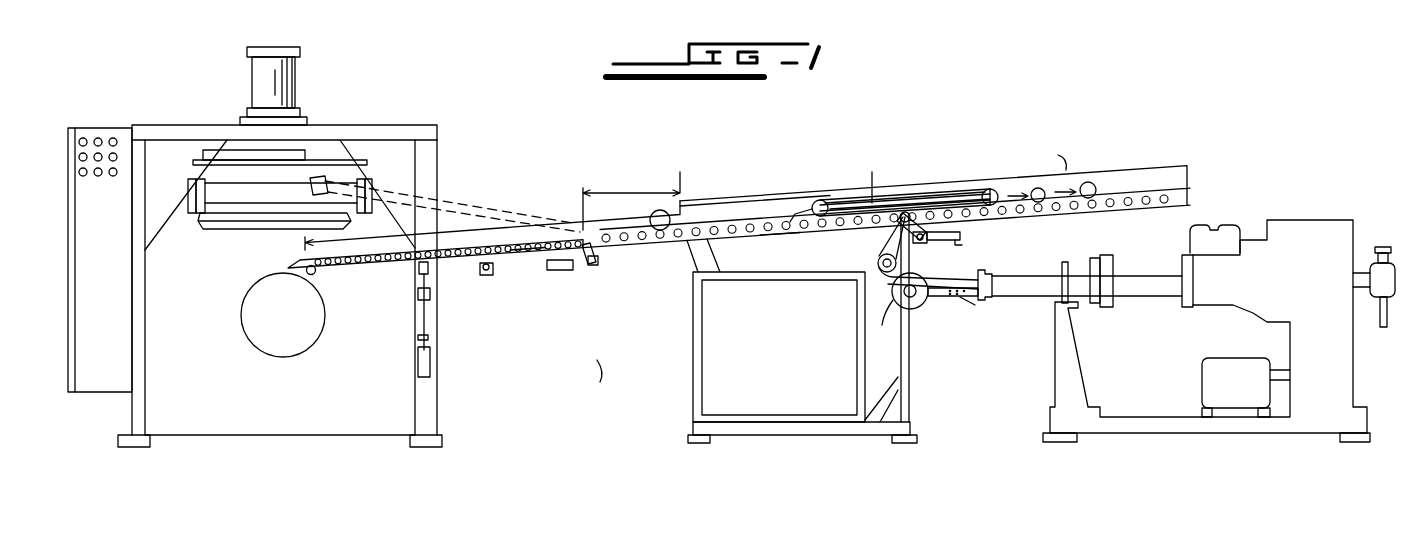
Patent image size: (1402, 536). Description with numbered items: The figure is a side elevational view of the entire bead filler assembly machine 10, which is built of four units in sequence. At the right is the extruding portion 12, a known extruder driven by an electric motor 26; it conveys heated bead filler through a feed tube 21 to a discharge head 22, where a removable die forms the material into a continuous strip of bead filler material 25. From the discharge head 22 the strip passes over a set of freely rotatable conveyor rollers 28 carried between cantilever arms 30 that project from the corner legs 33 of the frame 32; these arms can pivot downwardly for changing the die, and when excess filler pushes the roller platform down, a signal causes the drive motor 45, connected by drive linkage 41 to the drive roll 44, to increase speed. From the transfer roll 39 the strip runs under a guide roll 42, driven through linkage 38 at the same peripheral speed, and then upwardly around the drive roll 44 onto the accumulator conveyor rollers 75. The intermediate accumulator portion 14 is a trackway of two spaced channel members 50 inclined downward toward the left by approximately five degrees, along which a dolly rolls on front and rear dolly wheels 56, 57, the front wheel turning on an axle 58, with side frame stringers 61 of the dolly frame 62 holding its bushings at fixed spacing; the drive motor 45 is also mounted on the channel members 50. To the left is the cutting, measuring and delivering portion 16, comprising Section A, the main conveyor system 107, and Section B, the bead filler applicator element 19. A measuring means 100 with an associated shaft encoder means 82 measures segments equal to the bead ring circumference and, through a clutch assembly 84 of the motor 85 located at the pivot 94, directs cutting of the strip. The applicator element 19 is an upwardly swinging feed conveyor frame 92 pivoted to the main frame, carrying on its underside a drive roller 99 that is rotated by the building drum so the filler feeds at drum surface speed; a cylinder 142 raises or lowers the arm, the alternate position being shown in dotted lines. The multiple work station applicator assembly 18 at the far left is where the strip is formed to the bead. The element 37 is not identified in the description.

The bead filler assembly machine 10 is at (597, 382).
The extruding portion 12 is at (1253, 230).
The intermediate accumulator portion 14 is at (925, 163).
The cutting, measuring and delivering portion 16 is at (518, 188).
The multiple work station applicator assembly 18 is at (367, 115).
The bead filler applicator element 19 is at (446, 275).
The feed tube 21 is at (1117, 296).
The discharge head 22 is at (987, 300).
The strip of bead filler material 25 is at (935, 273).
The electric motor 26 is at (1250, 389).
The conveyor rollers 28 is at (967, 300).
The cantilever arms 30 is at (938, 296).
The frame 32 is at (865, 437).
The corner legs 33 is at (902, 407).
The pulley 37 is at (913, 297).
The linkage 38 is at (906, 257).
The transfer roll 39 is at (882, 325).
The drive linkage 41 is at (922, 232).
The guide roll 42 is at (878, 262).
The drive roll 44 is at (900, 213).
The drive motor 45 is at (955, 242).
The channel members 50 is at (1106, 170).
The front dolly wheel 56 is at (815, 208).
The rear dolly wheel 57 is at (995, 193).
The axle 58 is at (823, 200).
The side frame stringers 61 is at (907, 214).
The dolly frame 62 is at (960, 193).
The conveyor rollers 75 is at (783, 237).
The shaft encoder means 82 is at (493, 277).
The clutch assembly 84 is at (597, 267).
The motor 85 is at (558, 272).
The feed conveyor frame 92 is at (527, 262).
The pivot 94 is at (577, 221).
The drive roller 99 is at (316, 274).
The measuring means 100 is at (655, 212).
The main conveyor system 107 is at (640, 250).
The cylinder 142 is at (430, 327).